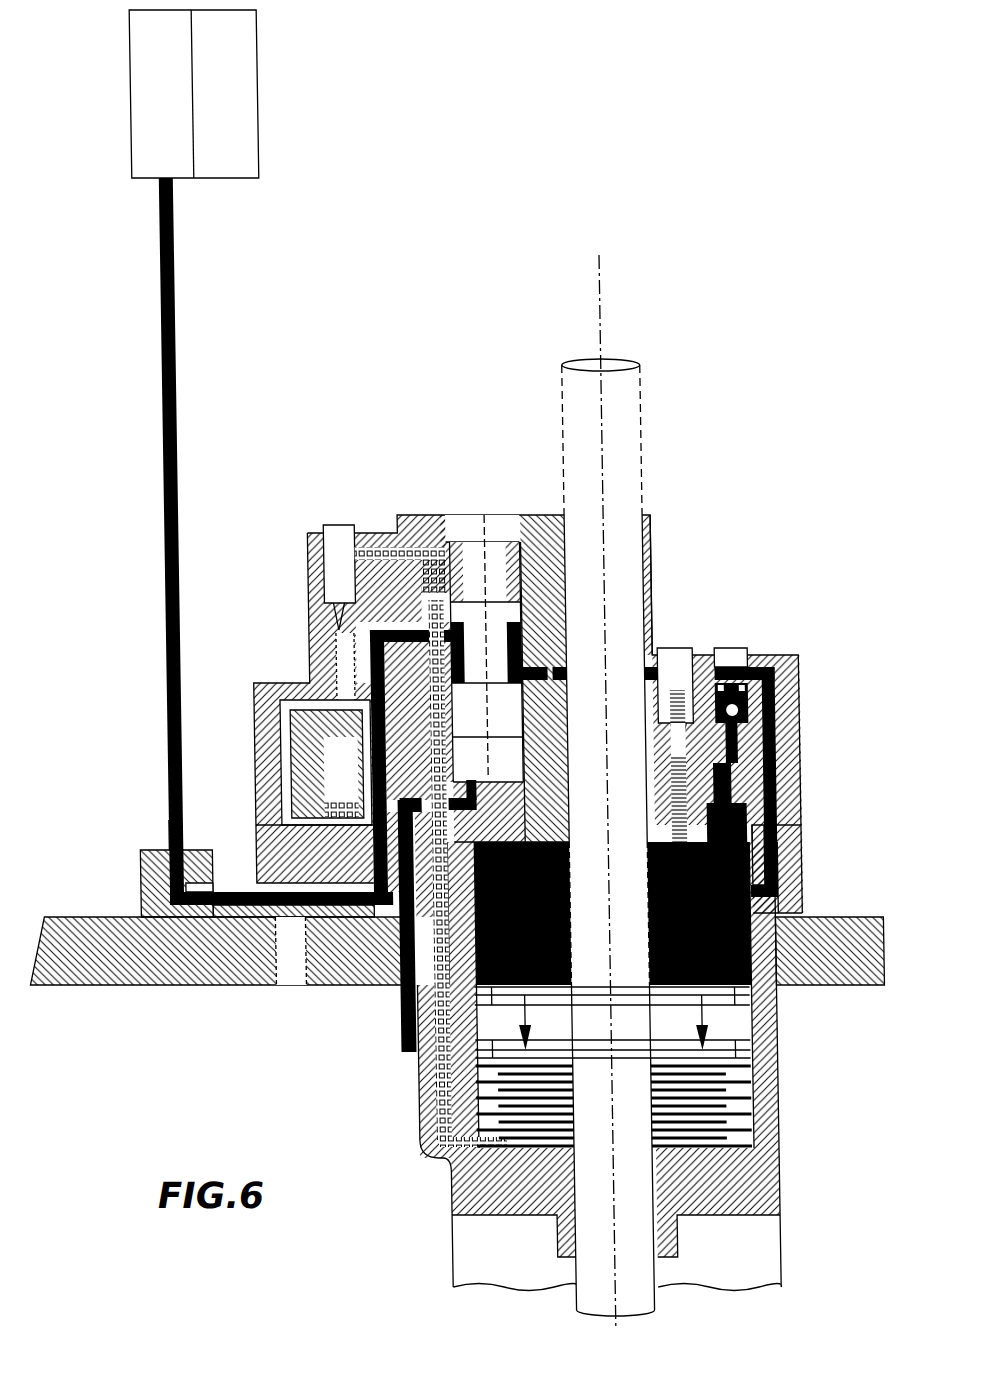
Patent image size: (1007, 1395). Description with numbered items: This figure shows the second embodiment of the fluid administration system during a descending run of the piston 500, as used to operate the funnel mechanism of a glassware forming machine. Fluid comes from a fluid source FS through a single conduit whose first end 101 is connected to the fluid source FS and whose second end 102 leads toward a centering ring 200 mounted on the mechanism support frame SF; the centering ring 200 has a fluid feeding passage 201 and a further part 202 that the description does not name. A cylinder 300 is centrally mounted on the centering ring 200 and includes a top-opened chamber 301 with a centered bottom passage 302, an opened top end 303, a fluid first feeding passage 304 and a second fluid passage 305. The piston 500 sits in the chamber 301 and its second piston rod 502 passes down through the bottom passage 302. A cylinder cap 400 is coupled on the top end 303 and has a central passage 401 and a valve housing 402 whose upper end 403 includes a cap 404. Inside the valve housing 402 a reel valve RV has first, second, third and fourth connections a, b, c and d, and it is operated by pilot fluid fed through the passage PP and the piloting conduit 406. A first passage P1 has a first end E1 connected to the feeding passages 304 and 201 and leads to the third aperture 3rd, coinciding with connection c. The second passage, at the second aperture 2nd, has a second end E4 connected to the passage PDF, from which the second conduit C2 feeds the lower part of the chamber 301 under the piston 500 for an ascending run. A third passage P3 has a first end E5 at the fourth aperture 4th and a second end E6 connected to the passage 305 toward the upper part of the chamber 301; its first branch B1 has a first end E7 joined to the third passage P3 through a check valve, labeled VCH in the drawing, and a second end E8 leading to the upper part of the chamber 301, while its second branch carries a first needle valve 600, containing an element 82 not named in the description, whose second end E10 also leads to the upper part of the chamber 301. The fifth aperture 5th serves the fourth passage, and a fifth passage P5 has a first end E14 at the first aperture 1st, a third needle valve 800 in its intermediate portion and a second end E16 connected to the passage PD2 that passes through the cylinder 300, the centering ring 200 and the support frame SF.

The fluid source FS is at (258, 98).
The first end 101 is at (181, 188).
The second end 102 is at (168, 812).
The centering ring 200 is at (138, 862).
The fluid feeding passage 201 is at (160, 878).
The pedestal top 202 is at (168, 838).
The mechanism support frame SF is at (88, 972).
The passage PD2 is at (287, 973).
The cylinder cap 400 is at (800, 771).
The upper end 403 is at (451, 556).
The cap 404 is at (508, 528).
The valve housing 402 is at (514, 751).
The central passage 401 is at (648, 800).
The third needle valve 800 is at (344, 525).
The fifth passage P5 is at (343, 648).
The first end E14 is at (383, 548).
The first aperture 1st is at (449, 553).
The second aperture 2nd is at (464, 590).
The third aperture 3rd is at (456, 603).
The fourth aperture 4th is at (522, 683).
The fifth aperture 5th is at (447, 713).
The first connection a is at (468, 634).
The second connection b is at (508, 634).
The third connection c is at (468, 665).
The fourth connection d is at (508, 665).
The second end E4 is at (438, 780).
The piloting conduit 406 is at (470, 792).
The third passage P3 is at (621, 672).
The reel valve RV is at (565, 655).
The first end E5 is at (563, 690).
The first needle valve 600 is at (676, 648).
The spring 82 is at (670, 700).
The first end E7 is at (672, 710).
The first branch B1 is at (705, 741).
The second end E8 is at (680, 832).
The valve chamber VCH is at (736, 648).
The second end E6 is at (788, 805).
The second end E10 is at (795, 828).
The second fluid passage 305 is at (795, 846).
The opened top end 303 is at (795, 867).
The top-opened chamber 301 is at (772, 904).
The fluid first feeding passage 304 is at (378, 836).
The second end E16 is at (343, 780).
The first end E1 is at (352, 754).
The first passage P1 is at (365, 733).
The cylinder 300 is at (772, 1098).
The second conduit C2 is at (440, 1131).
The passage PP is at (404, 1052).
The passage PDF is at (440, 1010).
The second piston rod 502 is at (657, 1302).
The piston 500 is at (612, 1022).
The centered bottom passage 302 is at (657, 1140).